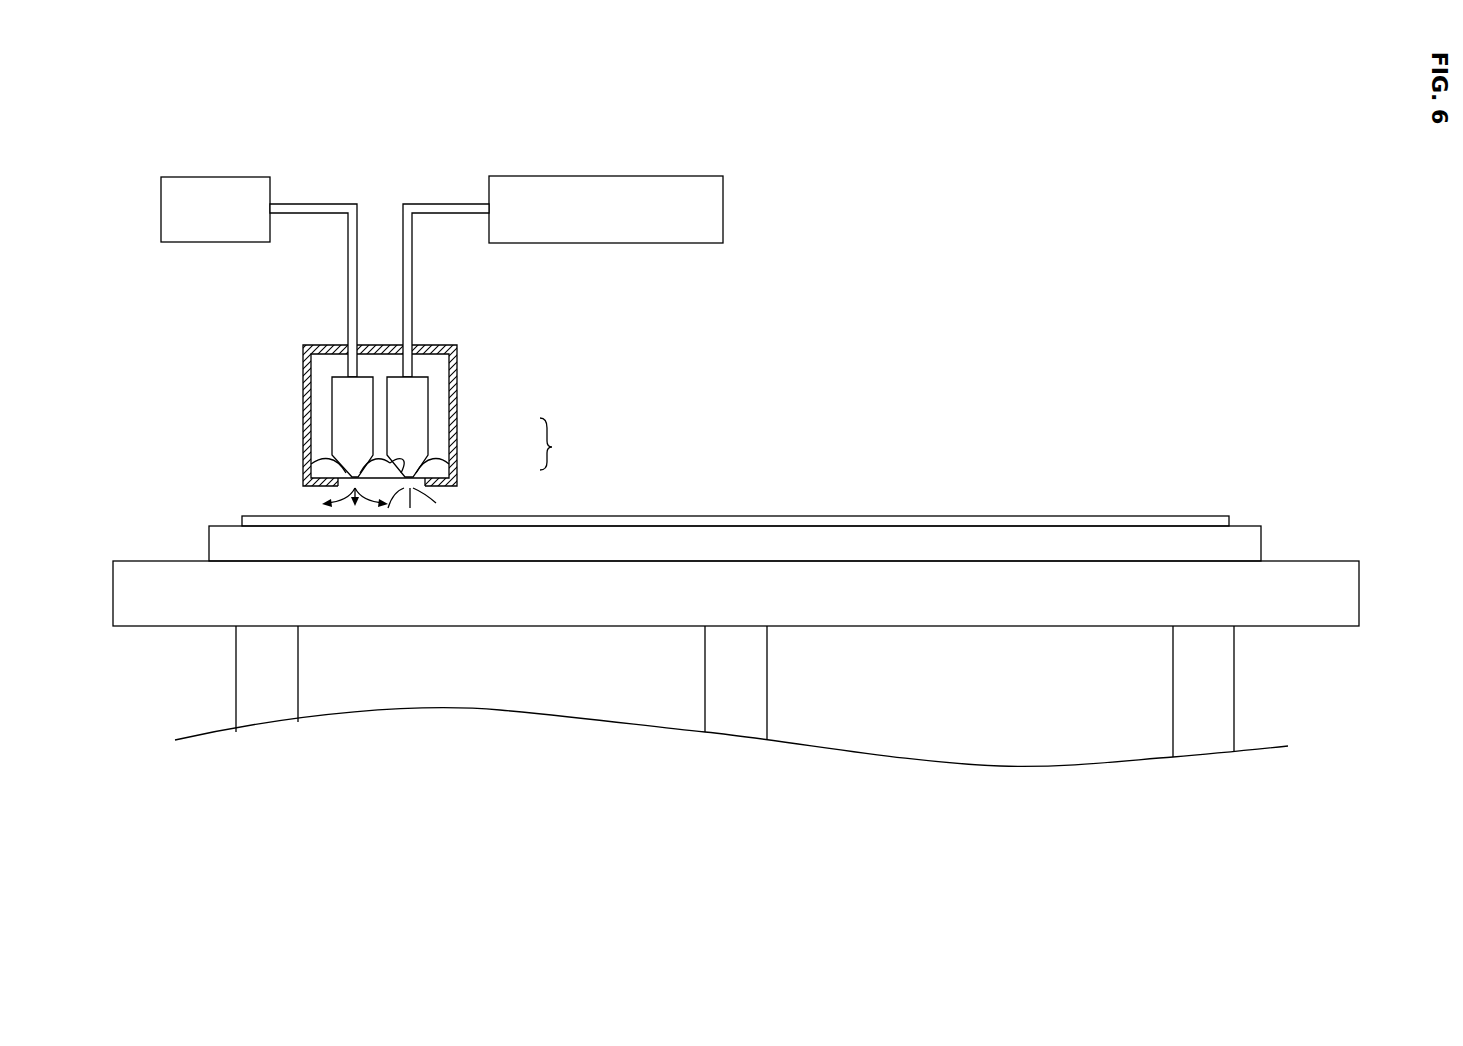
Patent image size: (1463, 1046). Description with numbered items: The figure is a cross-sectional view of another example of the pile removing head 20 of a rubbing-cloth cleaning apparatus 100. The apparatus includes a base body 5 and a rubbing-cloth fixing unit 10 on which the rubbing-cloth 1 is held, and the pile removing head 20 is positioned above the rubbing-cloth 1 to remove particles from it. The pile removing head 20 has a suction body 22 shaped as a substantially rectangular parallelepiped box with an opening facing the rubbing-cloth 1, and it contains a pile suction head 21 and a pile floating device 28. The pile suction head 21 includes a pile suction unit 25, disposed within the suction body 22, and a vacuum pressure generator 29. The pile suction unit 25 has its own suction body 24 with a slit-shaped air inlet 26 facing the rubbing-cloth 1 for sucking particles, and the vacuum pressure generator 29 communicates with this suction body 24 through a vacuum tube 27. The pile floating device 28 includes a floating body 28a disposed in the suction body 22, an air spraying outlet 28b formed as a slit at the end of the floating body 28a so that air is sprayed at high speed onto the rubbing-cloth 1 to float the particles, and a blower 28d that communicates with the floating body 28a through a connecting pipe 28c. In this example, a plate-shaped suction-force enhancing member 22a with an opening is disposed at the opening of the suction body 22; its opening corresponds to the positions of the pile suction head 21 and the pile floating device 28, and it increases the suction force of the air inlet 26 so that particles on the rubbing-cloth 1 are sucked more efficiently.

The rubbing-cloth cleaning apparatus 100 is at (929, 333).
The pile removing head 20 is at (381, 166).
The suction body 22 is at (432, 398).
The suction-force enhancing member 22a is at (428, 487).
The pile suction head 21 is at (484, 437).
The suction body 24 is at (430, 424).
The pile suction unit 25 is at (561, 444).
The air inlet 26 is at (440, 462).
The vacuum tube 27 is at (456, 204).
The pile floating device 28 is at (303, 438).
The floating body 28a is at (332, 424).
The air spraying outlet 28b is at (311, 467).
The connecting pipe 28c is at (305, 204).
The blower 28d is at (216, 177).
The vacuum pressure generator 29 is at (605, 176).
The rubbing-cloth 1 is at (800, 516).
The rubbing-cloth fixing unit 10 is at (1258, 500).
The base body 5 is at (1213, 684).